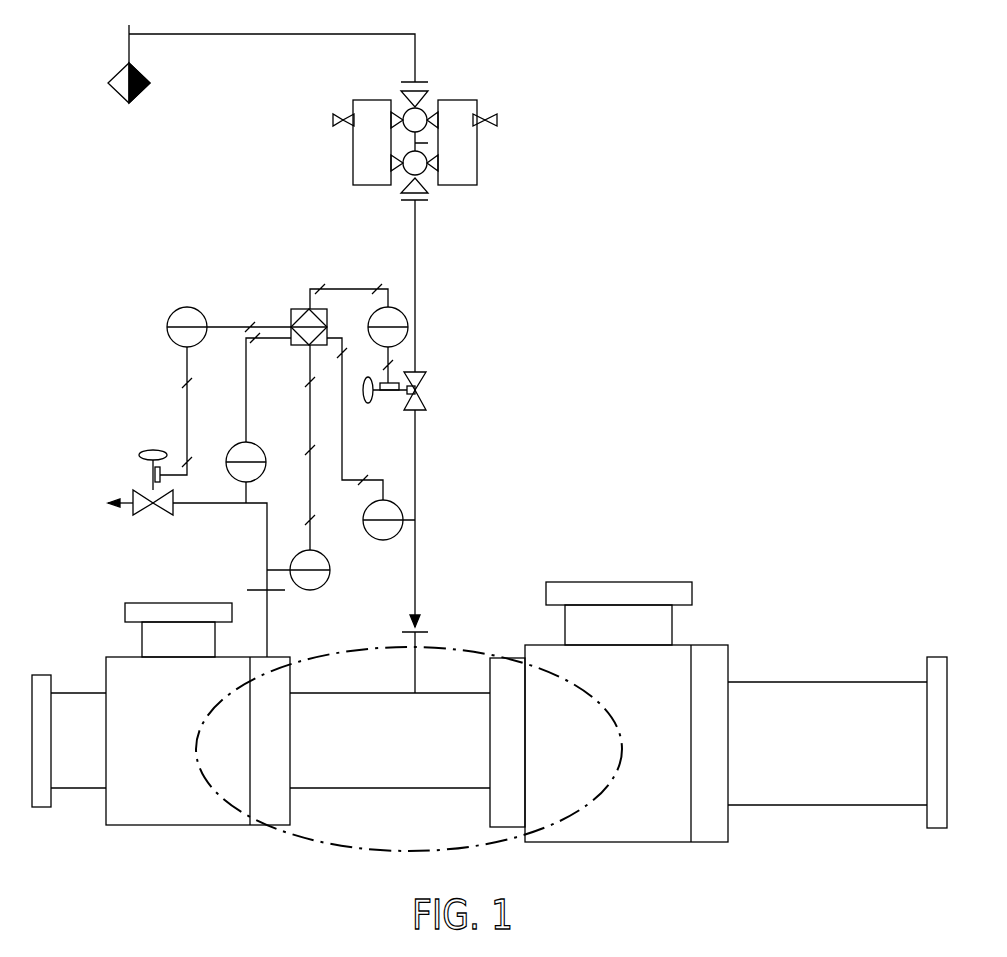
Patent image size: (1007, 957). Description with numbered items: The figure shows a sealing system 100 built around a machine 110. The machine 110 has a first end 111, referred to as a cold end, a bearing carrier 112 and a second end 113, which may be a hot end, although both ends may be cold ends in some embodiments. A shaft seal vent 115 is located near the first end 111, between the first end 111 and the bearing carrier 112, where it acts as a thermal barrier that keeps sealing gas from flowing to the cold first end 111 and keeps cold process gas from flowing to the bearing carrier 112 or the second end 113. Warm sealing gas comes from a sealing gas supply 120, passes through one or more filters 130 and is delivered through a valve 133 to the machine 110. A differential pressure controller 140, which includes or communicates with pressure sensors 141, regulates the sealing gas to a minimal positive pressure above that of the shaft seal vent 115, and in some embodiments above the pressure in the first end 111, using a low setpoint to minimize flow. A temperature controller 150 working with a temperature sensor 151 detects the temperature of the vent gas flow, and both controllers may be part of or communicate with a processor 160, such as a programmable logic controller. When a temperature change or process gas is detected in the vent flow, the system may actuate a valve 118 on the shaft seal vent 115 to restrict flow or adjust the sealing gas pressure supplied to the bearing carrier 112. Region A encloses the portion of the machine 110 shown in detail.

The sealing system 100 is at (628, 187).
The machine 110 is at (489, 671).
The first end 111 is at (193, 696).
The bearing carrier 112 is at (407, 757).
The second end 113 is at (637, 696).
The shaft seal vent 115 is at (233, 546).
The valve 118 is at (104, 460).
The sealing gas supply 120 is at (115, 74).
The filters 130 is at (477, 160).
The valve 133 is at (427, 376).
The differential pressure controller 140 is at (398, 307).
The pressure sensors 141 is at (376, 542).
The temperature controller 150 is at (182, 307).
The temperature sensor 151 is at (252, 402).
The processor 160 is at (292, 309).
The detail region A is at (310, 842).